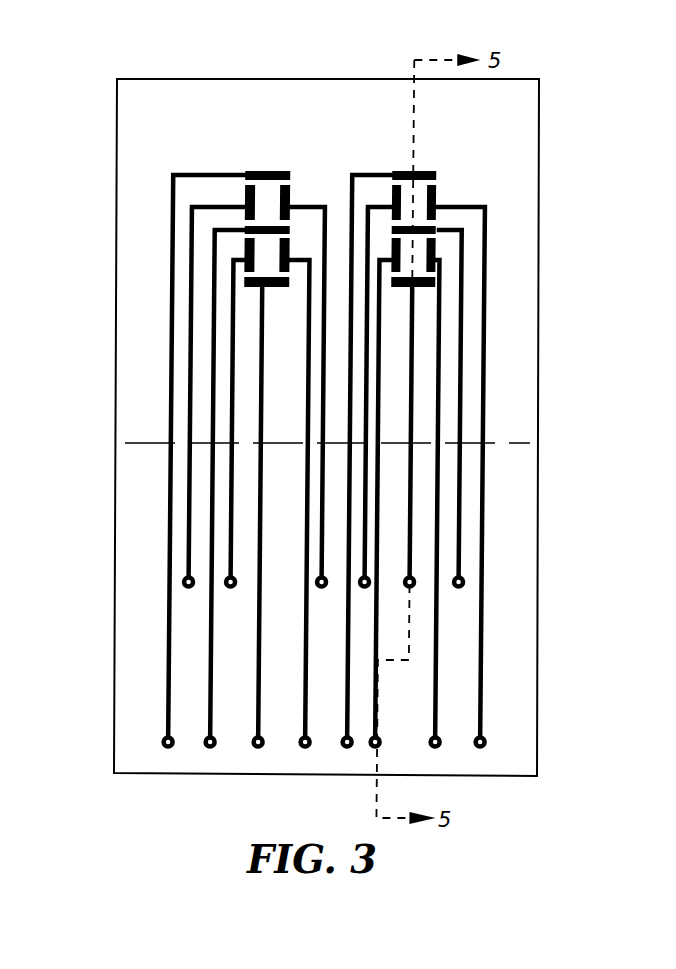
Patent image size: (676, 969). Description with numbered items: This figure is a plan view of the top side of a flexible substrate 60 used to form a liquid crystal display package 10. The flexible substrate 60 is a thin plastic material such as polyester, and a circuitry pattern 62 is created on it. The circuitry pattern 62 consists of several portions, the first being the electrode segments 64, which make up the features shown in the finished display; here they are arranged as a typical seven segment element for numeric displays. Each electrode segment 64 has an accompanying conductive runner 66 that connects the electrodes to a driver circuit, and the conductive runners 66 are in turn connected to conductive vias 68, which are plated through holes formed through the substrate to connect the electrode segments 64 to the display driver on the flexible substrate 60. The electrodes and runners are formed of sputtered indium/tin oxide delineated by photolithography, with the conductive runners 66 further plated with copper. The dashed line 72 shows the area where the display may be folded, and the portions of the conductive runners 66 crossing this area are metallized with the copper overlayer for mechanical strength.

The liquid crystal display package 10 is at (392, 427).
The flexible substrate 60 is at (523, 158).
The circuitry pattern 62 is at (197, 110).
The electrode segments 64 is at (402, 172).
The conductive runners 66 is at (462, 263).
The conductive vias 68 is at (417, 582).
The dashed line 72 is at (508, 444).